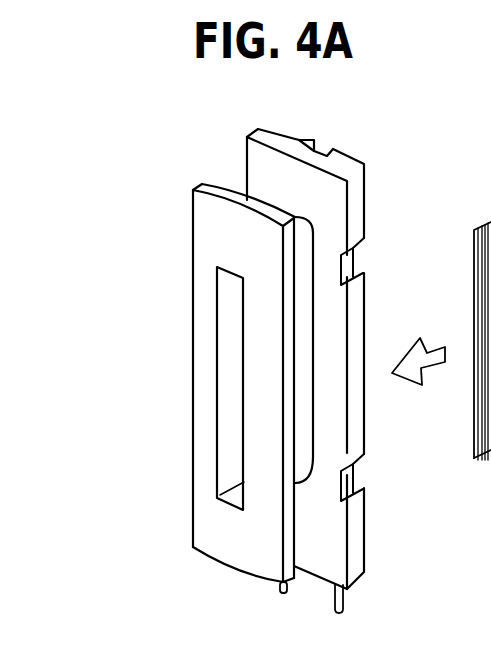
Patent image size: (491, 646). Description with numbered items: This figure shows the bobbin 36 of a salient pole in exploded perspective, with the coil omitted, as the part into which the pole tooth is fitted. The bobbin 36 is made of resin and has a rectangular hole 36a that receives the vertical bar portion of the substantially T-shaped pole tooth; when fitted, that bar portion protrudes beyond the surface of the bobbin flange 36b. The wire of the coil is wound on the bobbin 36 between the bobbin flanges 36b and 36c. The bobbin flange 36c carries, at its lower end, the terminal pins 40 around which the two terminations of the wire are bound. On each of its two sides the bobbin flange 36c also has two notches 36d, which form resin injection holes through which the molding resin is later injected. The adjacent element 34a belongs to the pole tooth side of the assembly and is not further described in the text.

The bobbin 36 is at (173, 186).
The rectangular hole 36a is at (232, 464).
The bobbin flange 36b is at (207, 237).
The bobbin flange 36c is at (263, 163).
The notch 36d is at (352, 267).
The slot of frame 34a is at (484, 318).
The terminal pin 40 is at (283, 596).